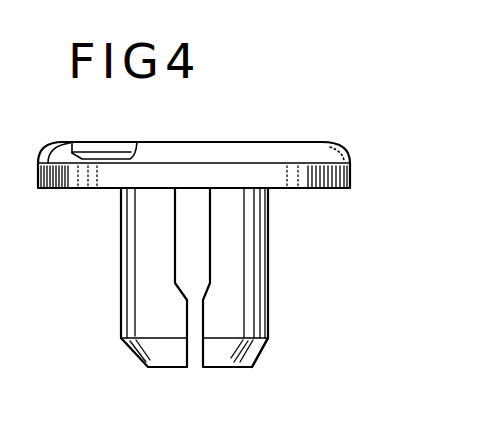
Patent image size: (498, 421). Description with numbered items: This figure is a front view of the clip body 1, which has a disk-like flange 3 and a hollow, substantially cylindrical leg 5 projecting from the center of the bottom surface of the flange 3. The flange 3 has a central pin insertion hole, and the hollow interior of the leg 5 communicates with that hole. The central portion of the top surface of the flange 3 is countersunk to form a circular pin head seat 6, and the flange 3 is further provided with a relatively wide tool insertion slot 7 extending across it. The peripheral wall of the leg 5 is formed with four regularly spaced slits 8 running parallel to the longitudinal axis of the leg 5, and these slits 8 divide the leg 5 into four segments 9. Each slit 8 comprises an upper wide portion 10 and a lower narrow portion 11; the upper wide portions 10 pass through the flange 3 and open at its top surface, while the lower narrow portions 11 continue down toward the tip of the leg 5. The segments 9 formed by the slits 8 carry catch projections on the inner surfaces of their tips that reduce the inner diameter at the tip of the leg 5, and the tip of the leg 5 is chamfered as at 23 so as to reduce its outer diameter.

The clip body 1 is at (242, 256).
The flange 3 is at (352, 158).
The leg 5 is at (270, 300).
The pin head seat 6 is at (110, 156).
The tool insertion slot 7 is at (68, 160).
The slit 8 is at (203, 272).
The segment 9 is at (142, 300).
The upper wide portion 10 is at (197, 222).
The lower narrow portion 11 is at (202, 342).
The chamfer 23 is at (252, 360).